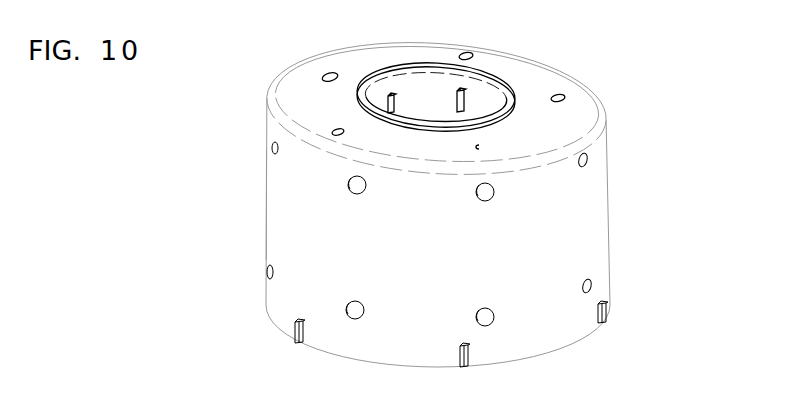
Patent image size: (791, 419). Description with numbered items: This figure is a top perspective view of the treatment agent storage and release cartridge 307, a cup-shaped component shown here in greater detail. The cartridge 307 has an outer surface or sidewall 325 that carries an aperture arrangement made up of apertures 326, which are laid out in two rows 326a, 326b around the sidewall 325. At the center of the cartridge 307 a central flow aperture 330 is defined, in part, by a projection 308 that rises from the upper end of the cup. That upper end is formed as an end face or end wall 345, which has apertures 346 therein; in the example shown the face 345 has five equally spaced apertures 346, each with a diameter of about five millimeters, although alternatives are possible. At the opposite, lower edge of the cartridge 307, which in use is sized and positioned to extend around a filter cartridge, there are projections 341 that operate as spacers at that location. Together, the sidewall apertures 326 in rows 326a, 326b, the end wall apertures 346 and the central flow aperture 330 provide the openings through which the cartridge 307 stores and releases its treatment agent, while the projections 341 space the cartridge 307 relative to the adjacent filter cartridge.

The treatment agent storage and release cartridge 307 is at (662, 193).
The projection 308 is at (500, 75).
The sidewall 325 is at (272, 205).
The apertures 326 is at (472, 210).
The first row of apertures 326a is at (247, 139).
The second row of apertures 326b is at (242, 282).
The central flow aperture 330 is at (417, 90).
The projections 341 is at (297, 343).
The end wall 345 is at (553, 80).
The apertures 346 is at (326, 74).